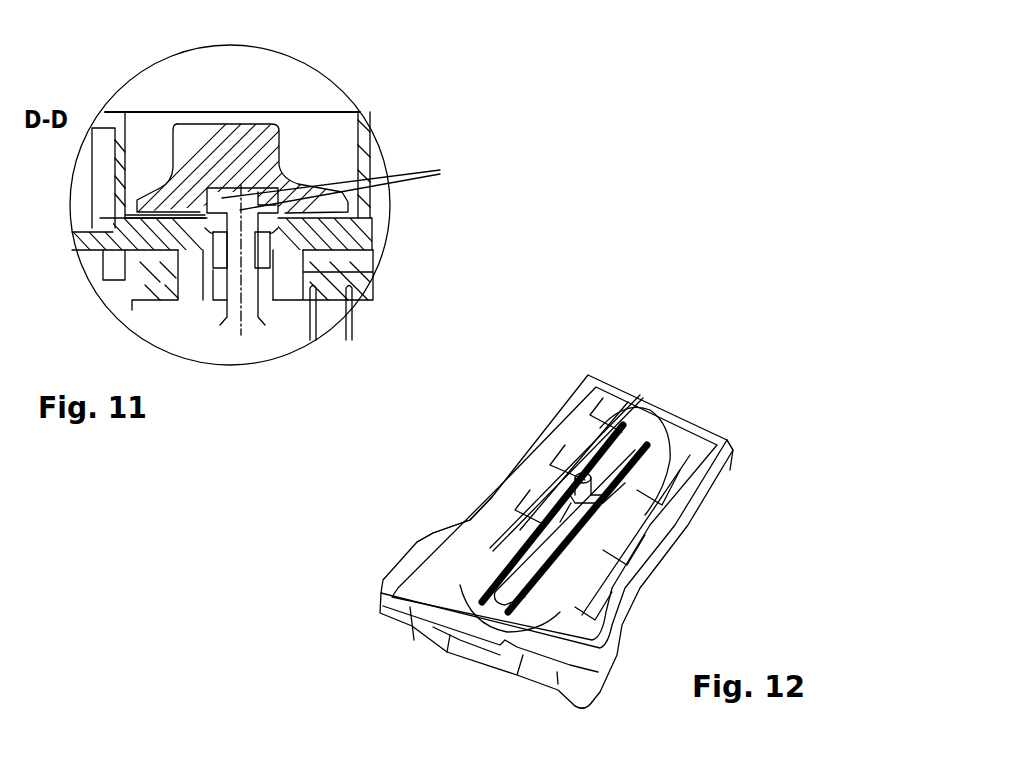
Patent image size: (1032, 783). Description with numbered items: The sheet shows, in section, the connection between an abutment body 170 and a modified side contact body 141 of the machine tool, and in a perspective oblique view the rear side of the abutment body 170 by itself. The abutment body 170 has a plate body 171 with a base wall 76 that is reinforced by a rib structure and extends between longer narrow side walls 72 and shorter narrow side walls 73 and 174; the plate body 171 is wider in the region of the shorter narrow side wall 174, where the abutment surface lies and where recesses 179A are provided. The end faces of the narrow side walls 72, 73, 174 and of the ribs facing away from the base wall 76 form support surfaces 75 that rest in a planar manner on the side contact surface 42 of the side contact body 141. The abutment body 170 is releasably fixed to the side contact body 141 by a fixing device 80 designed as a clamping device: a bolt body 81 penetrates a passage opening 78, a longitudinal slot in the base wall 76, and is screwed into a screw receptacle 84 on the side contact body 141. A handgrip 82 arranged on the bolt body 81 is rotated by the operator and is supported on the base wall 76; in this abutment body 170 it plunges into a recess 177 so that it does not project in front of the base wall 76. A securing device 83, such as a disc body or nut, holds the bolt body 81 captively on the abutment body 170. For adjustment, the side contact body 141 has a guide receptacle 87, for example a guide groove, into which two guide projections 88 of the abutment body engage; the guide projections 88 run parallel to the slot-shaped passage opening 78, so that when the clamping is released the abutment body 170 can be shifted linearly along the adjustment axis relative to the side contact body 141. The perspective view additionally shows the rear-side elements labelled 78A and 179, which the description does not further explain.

In FIG. 11, the recess 177 is at (155, 142).
In FIG. 11, the handgrip 82 is at (244, 132).
In FIG. 11, the fixing device 80 is at (290, 165).
In FIG. 11, the abutment body 170 is at (372, 152).
In FIG. 12, the abutment body 170 is at (676, 398).
In FIG. 11, the base wall 76 is at (100, 120).
In FIG. 11, the guide projection 88 is at (350, 184).
In FIG. 12, the guide projection 88 is at (493, 551).
In FIG. 11, the side contact surface 42 is at (368, 224).
In FIG. 11, the side contact body 141 is at (388, 240).
In FIG. 11, the guide receptacle 87 is at (207, 250).
In FIG. 11, the bolt body 81 is at (227, 313).
In FIG. 12, the bolt body 81 is at (580, 472).
In FIG. 11, the screw receptacle 84 is at (245, 303).
In FIG. 11, the securing device 83 is at (292, 310).
In FIG. 12, the securing device 83 is at (573, 492).
In FIG. 12, the support surface 75 is at (610, 427).
In FIG. 12, the shorter narrow side wall 73 is at (705, 420).
In FIG. 12, the longer narrow side wall 72 is at (537, 437).
In FIG. 12, the plate body 171 is at (493, 497).
In FIG. 12, the passage opening 78 is at (633, 467).
In FIG. 12, the second contact bar 78A is at (540, 563).
In FIG. 12, the foot 179 is at (400, 627).
In FIG. 12, the recess 179A is at (433, 627).
In FIG. 12, the shorter narrow side wall 174 is at (568, 700).